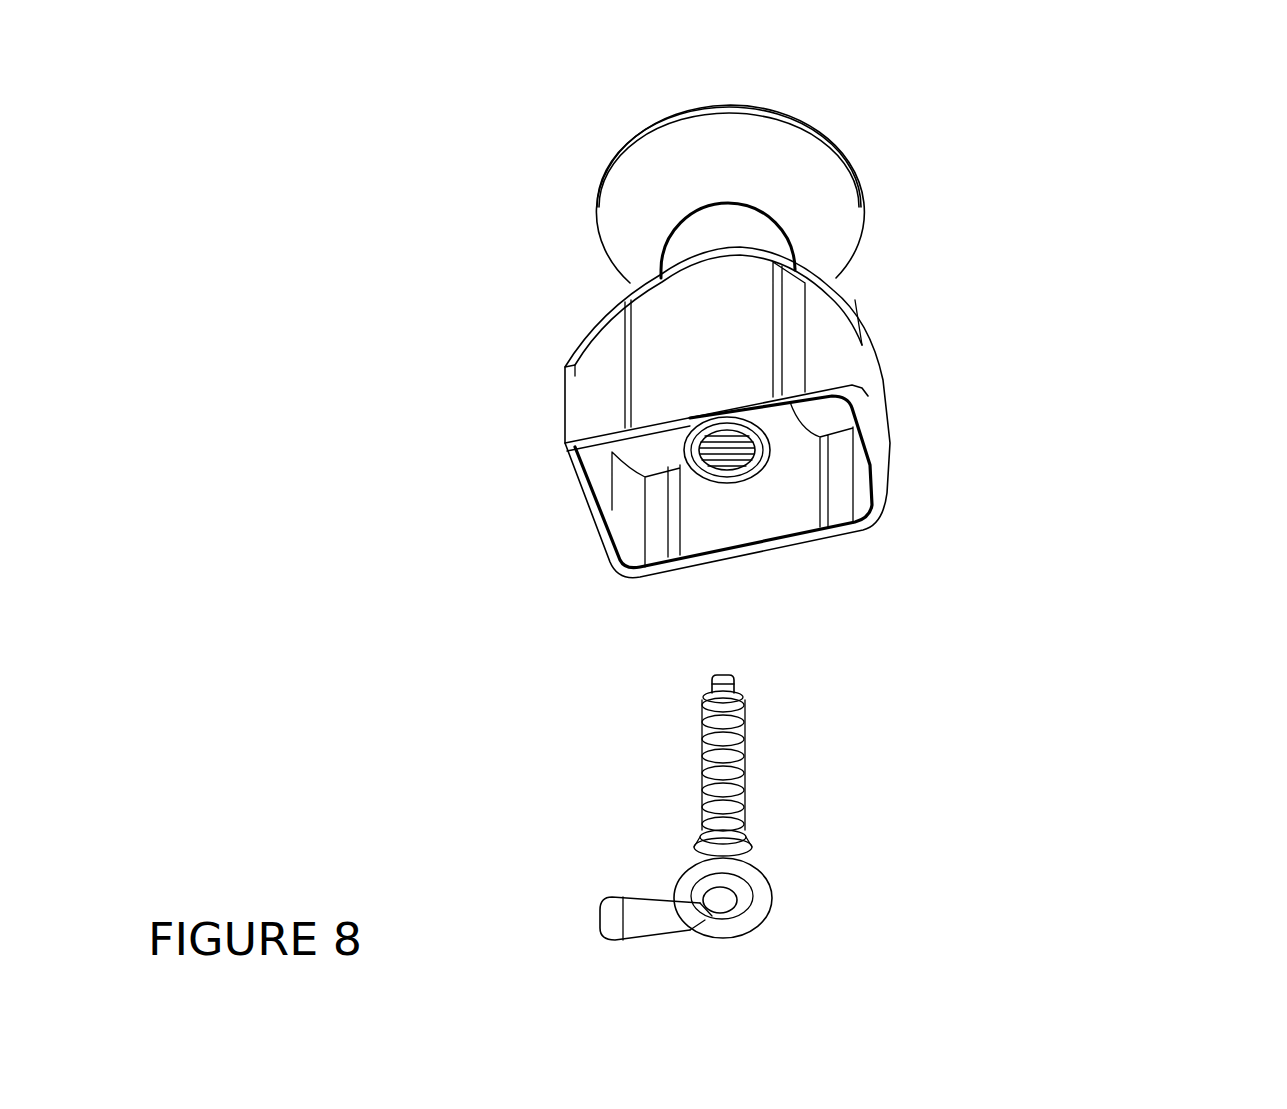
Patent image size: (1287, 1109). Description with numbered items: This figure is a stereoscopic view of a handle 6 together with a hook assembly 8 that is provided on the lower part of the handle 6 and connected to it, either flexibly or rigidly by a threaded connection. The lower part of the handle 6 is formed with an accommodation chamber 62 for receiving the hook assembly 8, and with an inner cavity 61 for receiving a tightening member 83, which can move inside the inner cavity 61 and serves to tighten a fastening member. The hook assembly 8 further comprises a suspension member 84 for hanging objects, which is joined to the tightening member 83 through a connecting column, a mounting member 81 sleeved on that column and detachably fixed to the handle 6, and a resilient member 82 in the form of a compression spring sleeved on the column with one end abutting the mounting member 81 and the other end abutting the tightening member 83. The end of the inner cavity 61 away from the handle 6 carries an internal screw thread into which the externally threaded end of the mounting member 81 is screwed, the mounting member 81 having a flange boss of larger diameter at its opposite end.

The handle 6 is at (758, 315).
The inner cavity 61 is at (665, 418).
The accommodation chamber 62 is at (785, 485).
The hook assembly 8 is at (755, 708).
The mounting member 81 is at (703, 833).
The resilient member 82 is at (755, 770).
The tightening member 83 is at (740, 673).
The suspension member 84 is at (650, 923).